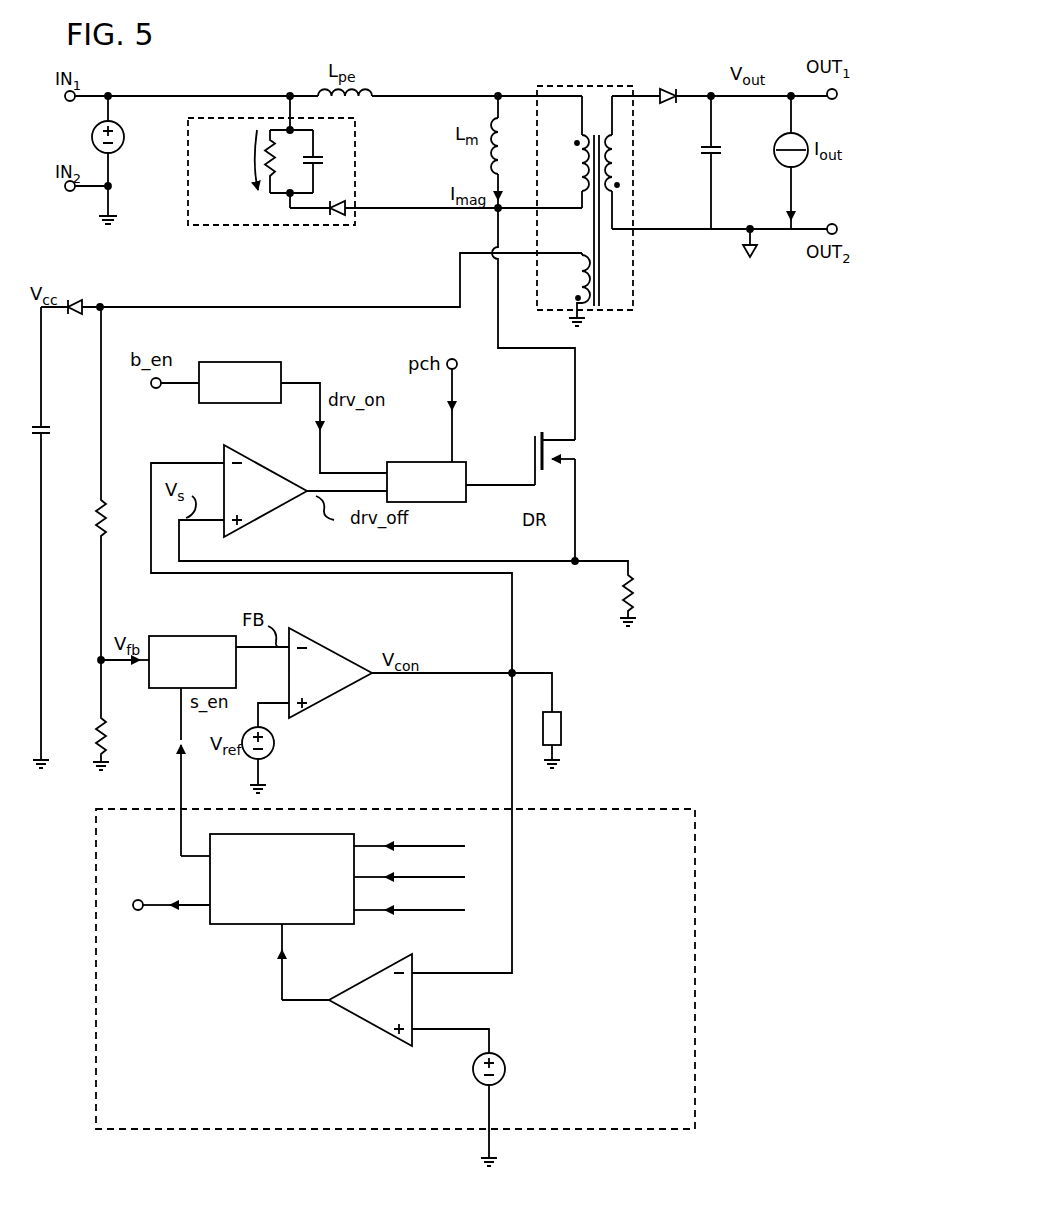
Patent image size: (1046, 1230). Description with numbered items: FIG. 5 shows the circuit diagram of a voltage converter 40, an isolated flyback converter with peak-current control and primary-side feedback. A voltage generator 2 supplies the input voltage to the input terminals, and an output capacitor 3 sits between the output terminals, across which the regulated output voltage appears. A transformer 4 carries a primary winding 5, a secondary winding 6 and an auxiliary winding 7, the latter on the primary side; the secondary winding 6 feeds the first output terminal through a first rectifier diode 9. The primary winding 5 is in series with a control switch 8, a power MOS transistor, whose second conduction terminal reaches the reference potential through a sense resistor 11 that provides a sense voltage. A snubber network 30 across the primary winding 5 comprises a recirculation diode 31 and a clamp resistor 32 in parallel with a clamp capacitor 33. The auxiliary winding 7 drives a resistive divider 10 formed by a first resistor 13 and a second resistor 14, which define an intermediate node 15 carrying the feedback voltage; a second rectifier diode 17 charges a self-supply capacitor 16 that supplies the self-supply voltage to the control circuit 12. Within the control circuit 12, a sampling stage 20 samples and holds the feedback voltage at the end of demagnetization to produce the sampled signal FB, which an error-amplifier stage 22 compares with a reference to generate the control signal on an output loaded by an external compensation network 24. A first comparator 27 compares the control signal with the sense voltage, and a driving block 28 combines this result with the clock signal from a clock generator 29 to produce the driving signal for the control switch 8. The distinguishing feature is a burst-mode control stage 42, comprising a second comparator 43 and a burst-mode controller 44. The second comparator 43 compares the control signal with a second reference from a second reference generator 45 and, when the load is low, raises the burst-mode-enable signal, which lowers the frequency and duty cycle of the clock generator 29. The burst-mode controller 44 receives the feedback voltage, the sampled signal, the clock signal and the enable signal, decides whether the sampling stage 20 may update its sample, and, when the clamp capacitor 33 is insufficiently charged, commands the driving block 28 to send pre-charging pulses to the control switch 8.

The voltage generator 2 is at (126, 137).
The output capacitor 3 is at (698, 150).
The transformer 4 is at (617, 206).
The primary winding 5 is at (580, 160).
The secondary winding 6 is at (620, 152).
The auxiliary winding 7 is at (578, 272).
The control switch 8 is at (575, 452).
The first rectifier diode 9 is at (672, 86).
The resistive divider 10 is at (141, 447).
The sense resistor 11 is at (622, 590).
The control circuit 12 is at (697, 631).
The first resistor 13 is at (79, 483).
The second resistor 14 is at (97, 735).
The intermediate node 15 is at (61, 538).
The self-supply capacitor 16 is at (46, 425).
The second rectifier diode 17 is at (88, 303).
The sampling stage 20 is at (190, 636).
The error-amplifier stage 22 is at (342, 696).
The external compensation network 24 is at (561, 722).
The first comparator 27 is at (268, 518).
The driving block 28 is at (466, 462).
The clock generator 29 is at (238, 403).
The snubber network 30 is at (343, 136).
The recirculation diode 31 is at (350, 204).
The clamp resistor 32 is at (265, 156).
The clamp capacitor 33 is at (330, 165).
The voltage converter 40 is at (475, 32).
The burst-mode control stage 42 is at (428, 919).
The second comparator 43 is at (366, 1026).
The burst-mode controller 44 is at (250, 926).
The second reference generator 45 is at (505, 1069).